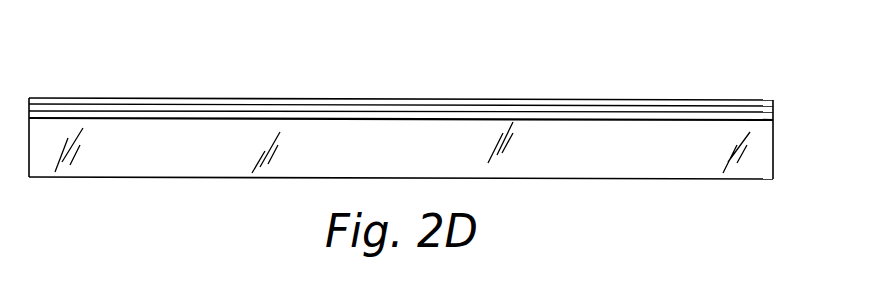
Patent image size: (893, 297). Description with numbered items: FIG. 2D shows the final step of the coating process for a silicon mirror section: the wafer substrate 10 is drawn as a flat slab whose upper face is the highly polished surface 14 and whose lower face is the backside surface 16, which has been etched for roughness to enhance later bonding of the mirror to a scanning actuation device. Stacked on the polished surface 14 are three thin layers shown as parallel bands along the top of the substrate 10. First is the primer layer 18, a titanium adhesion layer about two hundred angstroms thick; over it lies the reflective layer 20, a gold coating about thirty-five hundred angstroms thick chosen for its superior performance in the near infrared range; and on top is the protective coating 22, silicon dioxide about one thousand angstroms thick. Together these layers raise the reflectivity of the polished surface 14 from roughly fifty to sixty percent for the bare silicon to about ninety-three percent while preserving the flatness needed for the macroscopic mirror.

The substrate 10 is at (590, 153).
The polished surface 14 is at (126, 118).
The backside surface 16 is at (107, 178).
The primer layer 18 is at (665, 113).
The reflective layer 20 is at (482, 102).
The protective coating 22 is at (320, 100).